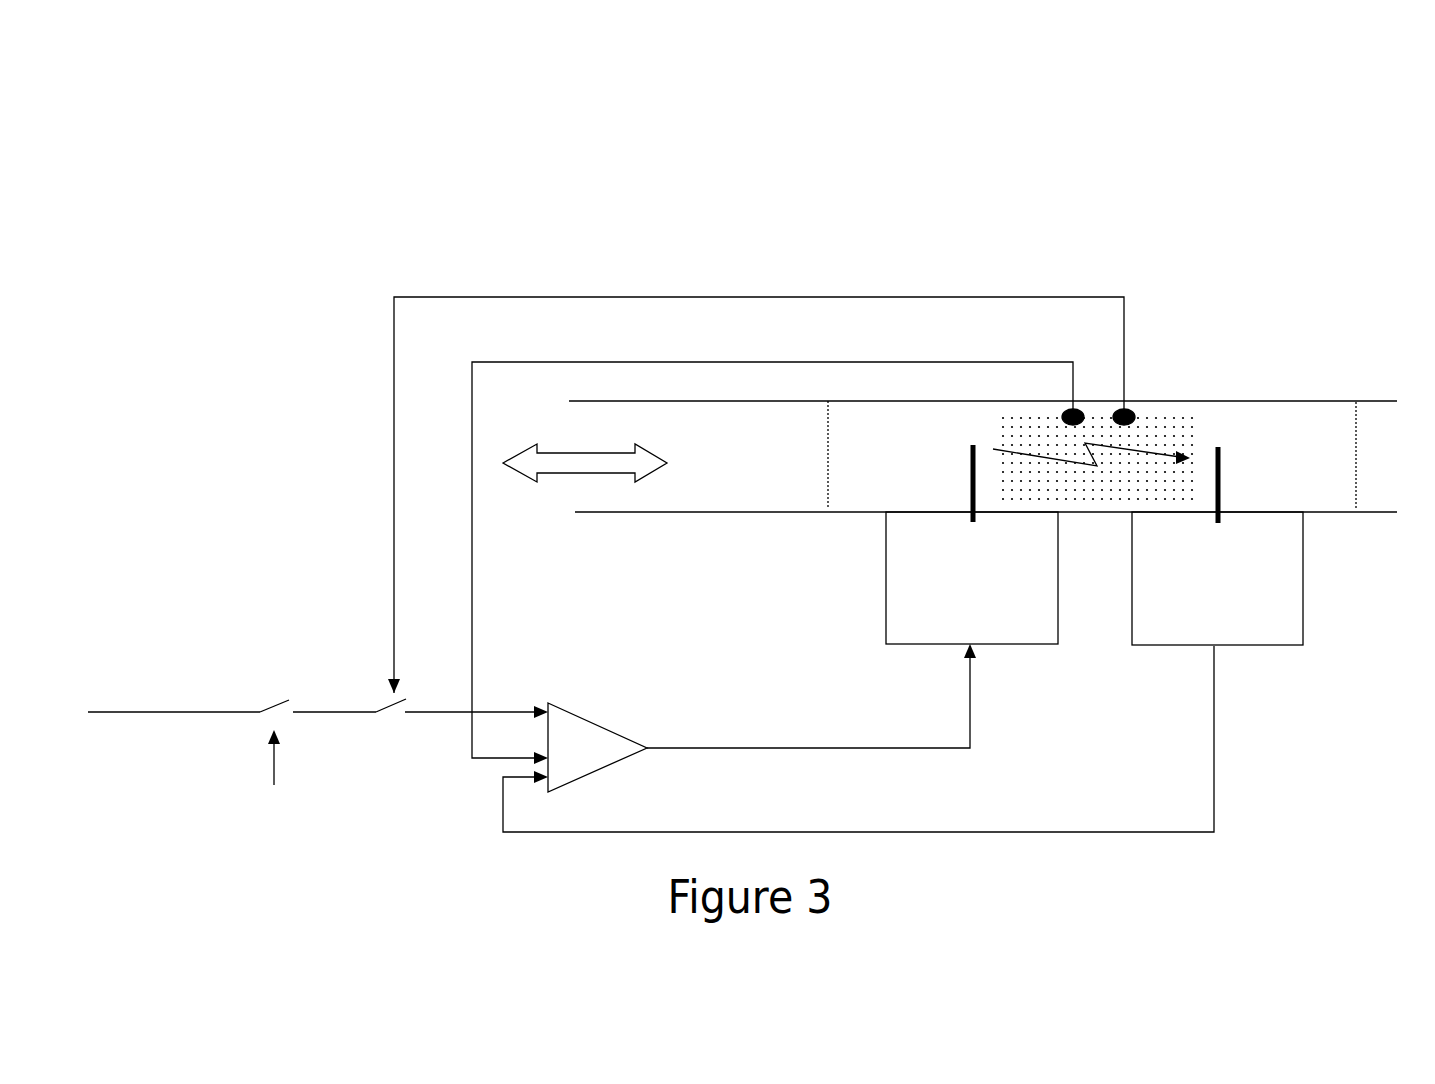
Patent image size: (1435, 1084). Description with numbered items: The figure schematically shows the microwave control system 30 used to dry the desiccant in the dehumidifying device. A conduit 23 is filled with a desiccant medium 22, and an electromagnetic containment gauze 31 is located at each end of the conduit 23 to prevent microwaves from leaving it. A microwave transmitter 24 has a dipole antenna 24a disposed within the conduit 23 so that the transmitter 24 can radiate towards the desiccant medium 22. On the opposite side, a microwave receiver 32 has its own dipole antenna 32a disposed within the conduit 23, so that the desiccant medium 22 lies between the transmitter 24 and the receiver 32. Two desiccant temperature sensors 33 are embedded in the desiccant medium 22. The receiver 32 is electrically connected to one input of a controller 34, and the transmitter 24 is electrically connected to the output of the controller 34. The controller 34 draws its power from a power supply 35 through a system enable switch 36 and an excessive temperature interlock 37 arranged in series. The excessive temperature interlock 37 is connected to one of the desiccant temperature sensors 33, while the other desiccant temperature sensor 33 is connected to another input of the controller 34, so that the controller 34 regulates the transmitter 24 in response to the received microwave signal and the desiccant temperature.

The microwave control system 30 is at (328, 216).
The electromagnetic containment gauze 31 is at (828, 438).
The desiccant medium 22 is at (1172, 425).
The conduit 23 is at (1288, 400).
The desiccant temperature sensors 33 is at (1075, 408).
The microwave transmitter 24 is at (972, 578).
The dipole antenna 24a is at (968, 467).
The microwave receiver 32 is at (1217, 578).
The dipole antenna 32a is at (1218, 463).
The controller 34 is at (585, 758).
The power supply 35 is at (160, 686).
The system enable switch 36 is at (312, 717).
The excessive temperature interlock 37 is at (386, 737).